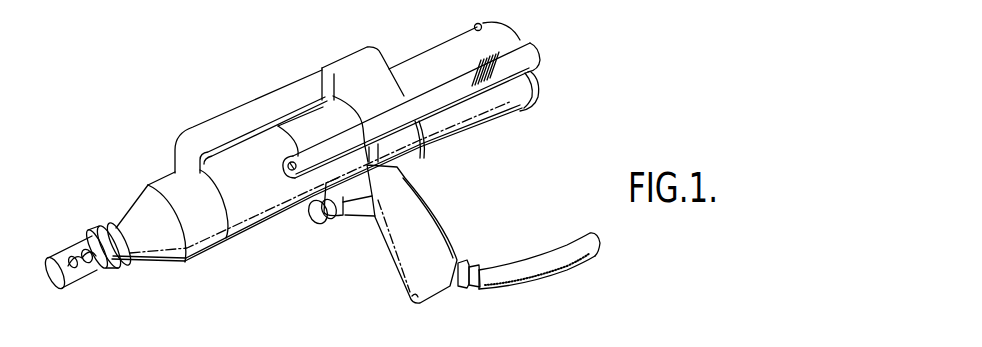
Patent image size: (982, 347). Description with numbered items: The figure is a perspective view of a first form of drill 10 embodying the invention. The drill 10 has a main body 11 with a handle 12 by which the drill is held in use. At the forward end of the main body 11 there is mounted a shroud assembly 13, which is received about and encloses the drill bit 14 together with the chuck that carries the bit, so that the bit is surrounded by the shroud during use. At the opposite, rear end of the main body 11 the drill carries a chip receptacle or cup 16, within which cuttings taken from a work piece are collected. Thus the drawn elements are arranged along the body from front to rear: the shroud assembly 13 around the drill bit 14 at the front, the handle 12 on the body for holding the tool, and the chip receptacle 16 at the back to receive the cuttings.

The drill 10 is at (596, 62).
The main body 11 is at (372, 162).
The handle 12 is at (427, 238).
The shroud assembly 13 is at (265, 222).
The drill bit 14 is at (72, 270).
The chip receptacle or cup 16 is at (490, 107).